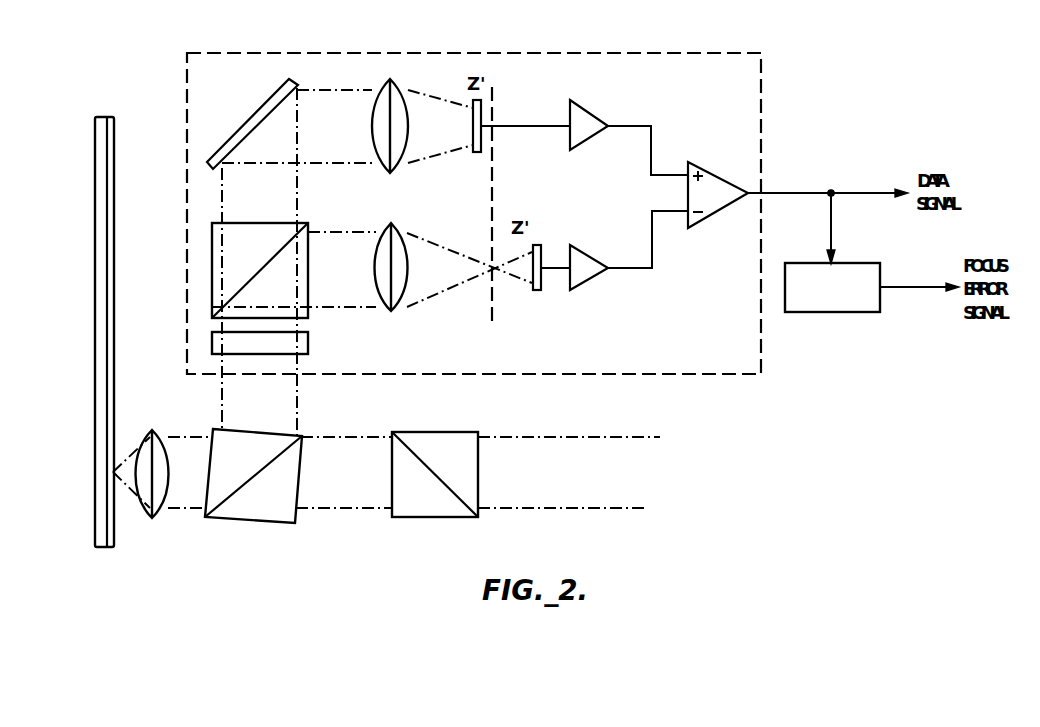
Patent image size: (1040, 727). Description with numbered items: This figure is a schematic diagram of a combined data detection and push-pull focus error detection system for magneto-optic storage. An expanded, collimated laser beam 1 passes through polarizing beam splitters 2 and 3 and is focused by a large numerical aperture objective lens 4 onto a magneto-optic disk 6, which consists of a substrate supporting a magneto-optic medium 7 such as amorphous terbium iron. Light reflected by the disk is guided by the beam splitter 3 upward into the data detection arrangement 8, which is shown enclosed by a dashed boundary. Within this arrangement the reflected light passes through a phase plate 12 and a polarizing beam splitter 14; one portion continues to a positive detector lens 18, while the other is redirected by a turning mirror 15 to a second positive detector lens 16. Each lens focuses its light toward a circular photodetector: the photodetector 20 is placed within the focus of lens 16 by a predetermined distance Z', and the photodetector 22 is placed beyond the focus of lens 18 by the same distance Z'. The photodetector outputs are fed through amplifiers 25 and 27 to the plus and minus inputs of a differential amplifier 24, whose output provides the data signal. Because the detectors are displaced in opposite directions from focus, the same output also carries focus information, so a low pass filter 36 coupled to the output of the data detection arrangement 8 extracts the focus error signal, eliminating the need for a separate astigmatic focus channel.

The laser beam 1 is at (585, 450).
The polarizing beam splitter 2 is at (440, 432).
The polarizing beam splitter 3 is at (260, 523).
The objective lens 4 is at (157, 514).
The magneto-optic disk 6 is at (92, 288).
The magneto-optic medium 7 is at (115, 152).
The data detection arrangement 8 is at (547, 53).
The phase plate 12 is at (308, 343).
The polarizing beam splitter 14 is at (278, 223).
The turning mirror 15 is at (251, 119).
The detector lens 16 is at (396, 165).
The detector lens 18 is at (399, 303).
The photodetector 20 is at (470, 100).
The photodetector 22 is at (539, 290).
The differential amplifier 24 is at (708, 165).
The amplifier 25 is at (583, 100).
The amplifier 27 is at (598, 236).
The low pass filter 36 is at (818, 312).